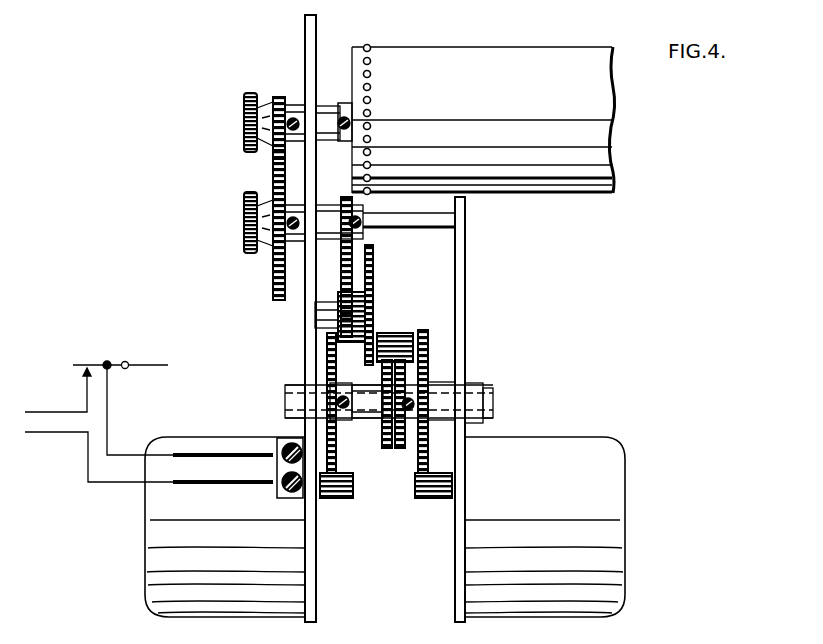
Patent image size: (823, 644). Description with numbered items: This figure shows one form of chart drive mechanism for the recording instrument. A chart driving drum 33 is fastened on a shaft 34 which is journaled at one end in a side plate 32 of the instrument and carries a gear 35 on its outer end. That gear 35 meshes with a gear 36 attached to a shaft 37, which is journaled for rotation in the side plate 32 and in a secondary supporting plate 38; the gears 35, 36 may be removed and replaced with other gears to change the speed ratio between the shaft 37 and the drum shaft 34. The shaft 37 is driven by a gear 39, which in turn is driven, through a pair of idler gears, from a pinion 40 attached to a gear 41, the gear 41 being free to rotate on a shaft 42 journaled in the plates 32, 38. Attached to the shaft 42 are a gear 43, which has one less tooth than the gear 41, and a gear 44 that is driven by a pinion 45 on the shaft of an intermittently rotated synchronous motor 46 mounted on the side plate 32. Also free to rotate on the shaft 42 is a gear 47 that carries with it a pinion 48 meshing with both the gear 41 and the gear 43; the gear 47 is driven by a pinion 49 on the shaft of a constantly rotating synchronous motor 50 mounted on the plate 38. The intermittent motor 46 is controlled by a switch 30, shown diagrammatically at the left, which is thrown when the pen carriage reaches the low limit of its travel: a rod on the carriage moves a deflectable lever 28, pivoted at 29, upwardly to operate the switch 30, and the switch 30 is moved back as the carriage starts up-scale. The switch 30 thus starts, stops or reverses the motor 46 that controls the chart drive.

The deflectable lever 28 is at (156, 365).
The pivot 29 is at (123, 361).
The switch 30 is at (87, 392).
The side plate 32 is at (308, 42).
The chart driving drum 33 is at (612, 110).
The shaft 34 is at (344, 106).
The gear 35 is at (278, 98).
The gear 36 is at (276, 186).
The shaft 37 is at (447, 220).
The secondary supporting plate 38 is at (463, 230).
The gear 39 is at (352, 254).
The pinion 40 is at (363, 418).
The gear 41 is at (387, 450).
The shaft 42 is at (472, 388).
The gear 43 is at (398, 449).
The gear 44 is at (327, 360).
The pinion 45 is at (339, 499).
The intermittently rotated synchronous motor 46 is at (208, 440).
The gear 47 is at (428, 346).
The pinion 48 is at (398, 334).
The pinion 49 is at (433, 499).
The constantly rotating synchronous motor 50 is at (553, 438).